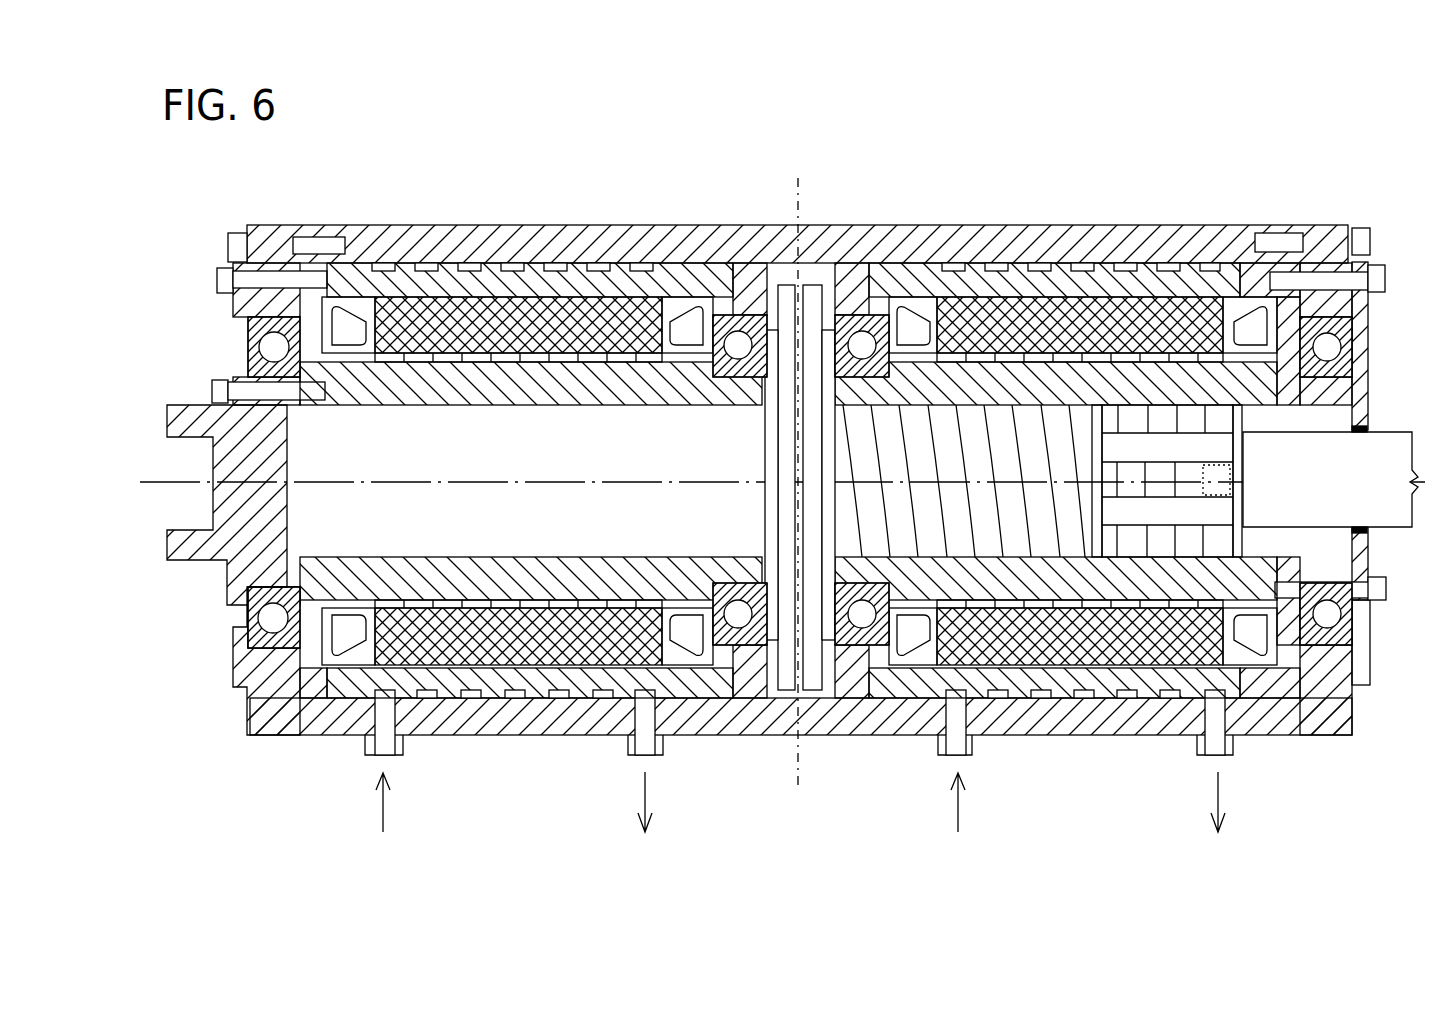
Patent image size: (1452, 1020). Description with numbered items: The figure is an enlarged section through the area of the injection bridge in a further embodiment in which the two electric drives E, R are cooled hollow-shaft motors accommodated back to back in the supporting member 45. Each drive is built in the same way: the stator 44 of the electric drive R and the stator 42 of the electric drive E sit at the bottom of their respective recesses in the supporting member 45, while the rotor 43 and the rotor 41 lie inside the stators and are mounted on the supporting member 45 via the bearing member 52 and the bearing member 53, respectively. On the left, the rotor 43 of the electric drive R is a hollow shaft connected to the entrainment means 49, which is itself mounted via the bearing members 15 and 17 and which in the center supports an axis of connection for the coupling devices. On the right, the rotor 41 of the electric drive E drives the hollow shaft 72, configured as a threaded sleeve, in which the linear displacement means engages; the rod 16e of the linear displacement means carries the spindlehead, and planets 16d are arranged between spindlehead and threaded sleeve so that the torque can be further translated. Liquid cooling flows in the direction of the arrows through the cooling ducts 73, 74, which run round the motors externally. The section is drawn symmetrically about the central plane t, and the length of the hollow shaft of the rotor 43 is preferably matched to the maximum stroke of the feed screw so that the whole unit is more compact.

The bearing member 15 is at (264, 346).
The planets 16d is at (1192, 543).
The rod 16e is at (1298, 466).
The bearing member 17 is at (1333, 345).
The rotor 41 is at (1062, 606).
The stator 42 is at (975, 318).
The rotor 43 is at (566, 603).
The stator 44 is at (454, 320).
The supporting member 45 is at (680, 247).
The entrainment means 49 is at (230, 432).
The bearing member 52 is at (739, 338).
The bearing member 53 is at (862, 338).
The hollow shaft 72 is at (922, 575).
The cooling duct 73 is at (473, 696).
The cooling duct 74 is at (999, 694).
The electric drive R is at (520, 288).
The electric drive E is at (1043, 286).
The symmetry plane t is at (799, 477).